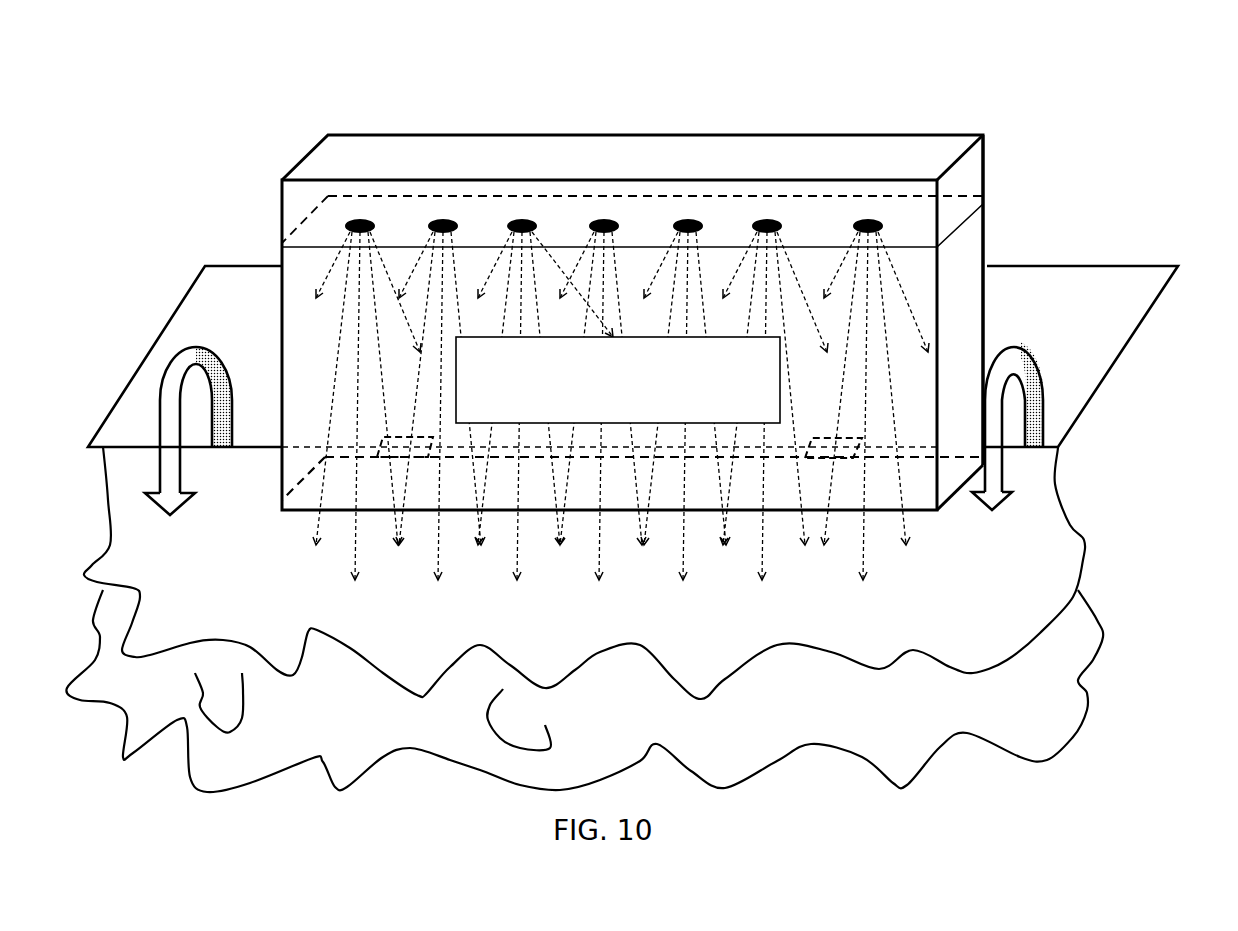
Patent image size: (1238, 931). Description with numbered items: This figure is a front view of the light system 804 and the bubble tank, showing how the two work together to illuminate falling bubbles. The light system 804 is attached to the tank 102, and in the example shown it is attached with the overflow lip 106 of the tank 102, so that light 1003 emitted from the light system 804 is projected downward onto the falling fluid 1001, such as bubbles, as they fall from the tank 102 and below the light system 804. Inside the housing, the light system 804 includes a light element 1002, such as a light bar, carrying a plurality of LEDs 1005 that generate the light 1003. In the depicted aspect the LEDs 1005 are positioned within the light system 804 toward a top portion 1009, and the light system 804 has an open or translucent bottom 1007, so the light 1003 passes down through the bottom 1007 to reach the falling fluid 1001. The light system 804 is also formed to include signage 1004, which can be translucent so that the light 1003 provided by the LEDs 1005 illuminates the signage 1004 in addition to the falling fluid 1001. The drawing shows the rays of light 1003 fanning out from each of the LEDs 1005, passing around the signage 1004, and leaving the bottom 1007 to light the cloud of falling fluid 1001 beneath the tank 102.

The tank 102 is at (1040, 266).
The overflow lip 106 is at (153, 447).
The light system 804 is at (280, 193).
The falling fluid 1001 is at (1103, 632).
The light element 1002 is at (867, 197).
The light 1003 is at (913, 534).
The signage 1004 is at (630, 355).
The LEDs 1005 is at (768, 228).
The bottom 1007 is at (930, 480).
The top portion 1009 is at (983, 148).